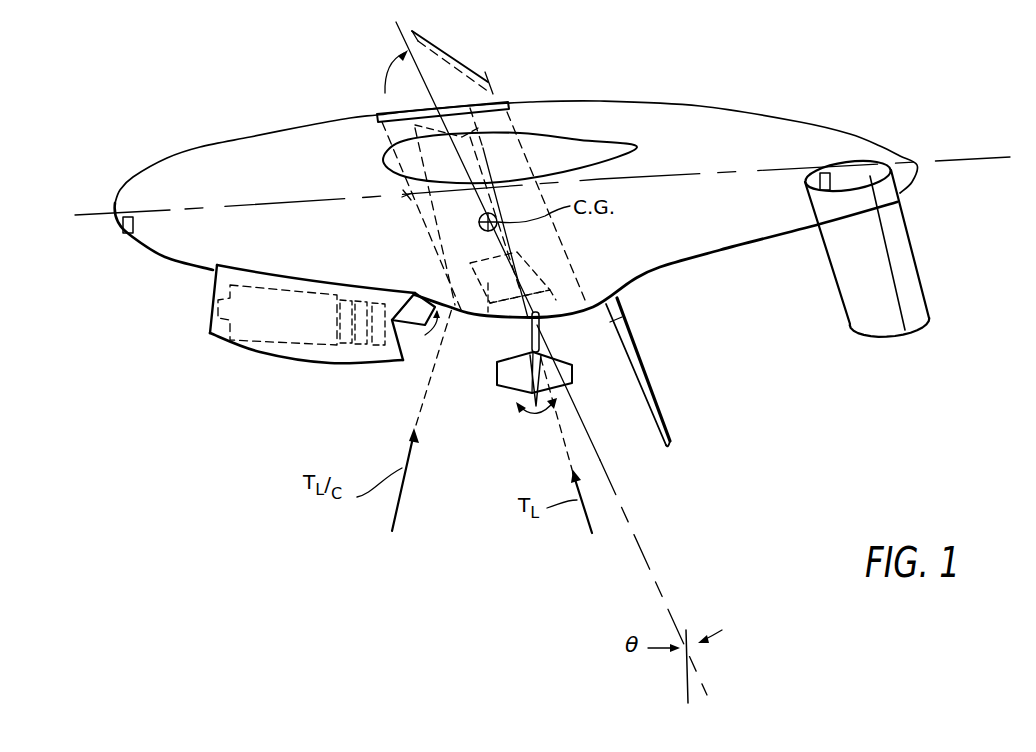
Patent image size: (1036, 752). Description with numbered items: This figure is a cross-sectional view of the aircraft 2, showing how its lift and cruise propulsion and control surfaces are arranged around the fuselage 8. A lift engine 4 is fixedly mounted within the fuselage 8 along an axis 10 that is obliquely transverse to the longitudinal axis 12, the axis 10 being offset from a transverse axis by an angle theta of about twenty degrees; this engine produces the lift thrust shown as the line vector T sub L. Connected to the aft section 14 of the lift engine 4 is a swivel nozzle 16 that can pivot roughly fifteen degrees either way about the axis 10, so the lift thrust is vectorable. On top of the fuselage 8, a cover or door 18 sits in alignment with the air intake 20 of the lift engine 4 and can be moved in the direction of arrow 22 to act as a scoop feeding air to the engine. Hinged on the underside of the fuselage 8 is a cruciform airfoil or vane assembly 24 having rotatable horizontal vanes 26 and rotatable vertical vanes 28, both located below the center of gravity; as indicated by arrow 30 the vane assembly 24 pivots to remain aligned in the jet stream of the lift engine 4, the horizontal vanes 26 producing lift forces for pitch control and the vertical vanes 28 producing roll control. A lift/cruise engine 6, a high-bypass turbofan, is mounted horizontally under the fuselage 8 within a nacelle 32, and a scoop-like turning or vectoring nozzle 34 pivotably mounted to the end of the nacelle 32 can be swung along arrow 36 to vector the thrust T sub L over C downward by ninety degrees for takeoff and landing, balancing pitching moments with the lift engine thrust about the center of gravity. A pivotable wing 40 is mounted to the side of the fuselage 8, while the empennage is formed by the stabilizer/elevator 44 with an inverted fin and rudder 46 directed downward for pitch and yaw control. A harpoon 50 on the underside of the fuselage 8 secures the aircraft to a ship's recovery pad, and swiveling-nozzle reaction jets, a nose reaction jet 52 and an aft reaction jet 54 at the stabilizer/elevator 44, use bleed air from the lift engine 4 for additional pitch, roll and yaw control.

The aircraft 2 is at (204, 81).
The lift engine 4 is at (489, 262).
The lift/cruise engine 6 is at (290, 352).
The fuselage 8 is at (641, 104).
The axis 10 is at (641, 546).
The longitudinal axis 12 is at (990, 158).
The aft section 14 is at (530, 256).
The swivel nozzle 16 is at (548, 292).
The cover or door 18 is at (380, 114).
The air intake 20 is at (494, 92).
The arrow 22 is at (384, 78).
The cruciform airfoil or vane assembly 24 is at (577, 464).
The horizontal vanes 26 is at (520, 417).
The vertical vanes 28 is at (498, 381).
The arrow 30 is at (533, 409).
The nacelle 32 is at (316, 362).
The turning or vectoring nozzle 34 is at (424, 418).
The arrow 36 is at (441, 331).
The pivotable wing 40 is at (551, 135).
The stabilizer/elevator 44 is at (869, 167).
The inverted fin and rudder 46 is at (853, 340).
The harpoon 50 is at (660, 391).
The reaction jet 52 is at (125, 236).
The reaction jet 54 is at (825, 173).